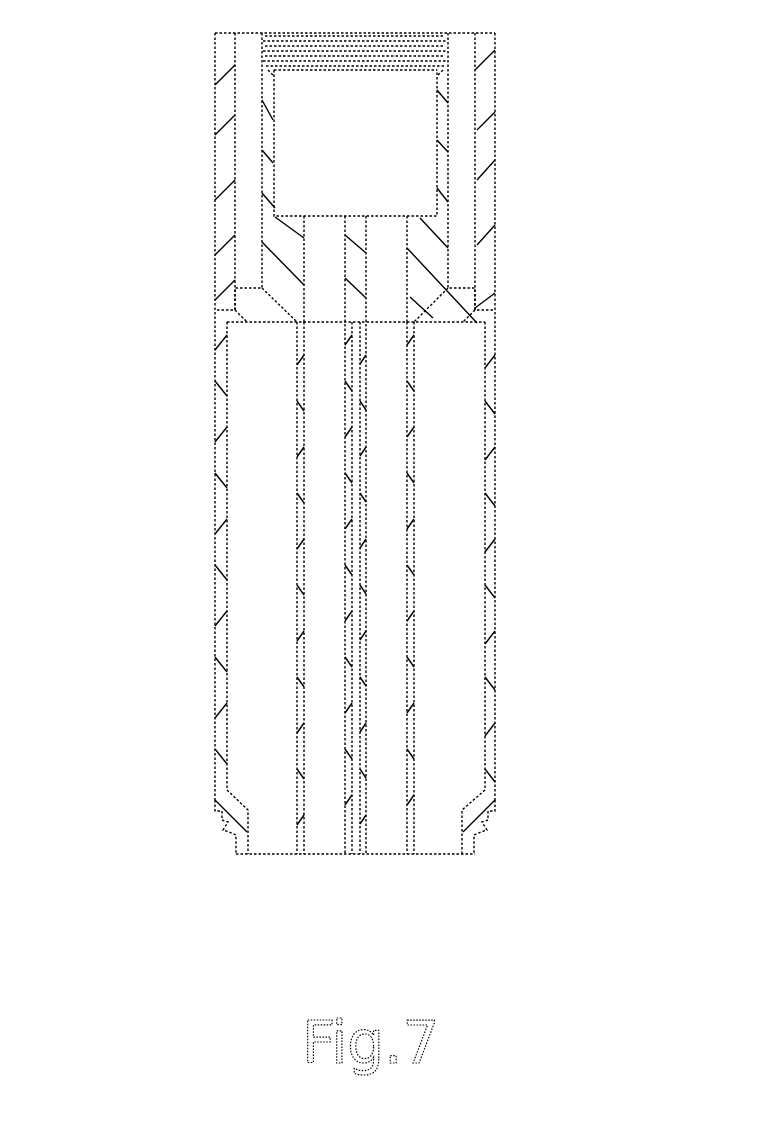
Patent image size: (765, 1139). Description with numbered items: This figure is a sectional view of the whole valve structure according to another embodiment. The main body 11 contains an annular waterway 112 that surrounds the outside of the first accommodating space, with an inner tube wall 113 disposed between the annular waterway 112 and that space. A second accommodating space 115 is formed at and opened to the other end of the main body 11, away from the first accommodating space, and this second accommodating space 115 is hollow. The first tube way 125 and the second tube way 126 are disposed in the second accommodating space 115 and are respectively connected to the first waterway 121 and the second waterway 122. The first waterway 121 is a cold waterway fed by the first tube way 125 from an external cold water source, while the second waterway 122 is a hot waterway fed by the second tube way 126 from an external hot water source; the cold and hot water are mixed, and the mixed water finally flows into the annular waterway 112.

The main body 11 is at (215, 196).
The annular waterway 112 is at (245, 120).
The inner tube wall 113 is at (437, 178).
The first waterway 121 is at (395, 270).
The second waterway 122 is at (322, 270).
The first tube way 125 is at (388, 417).
The second tube way 126 is at (322, 448).
The second accommodating space 115 is at (445, 623).